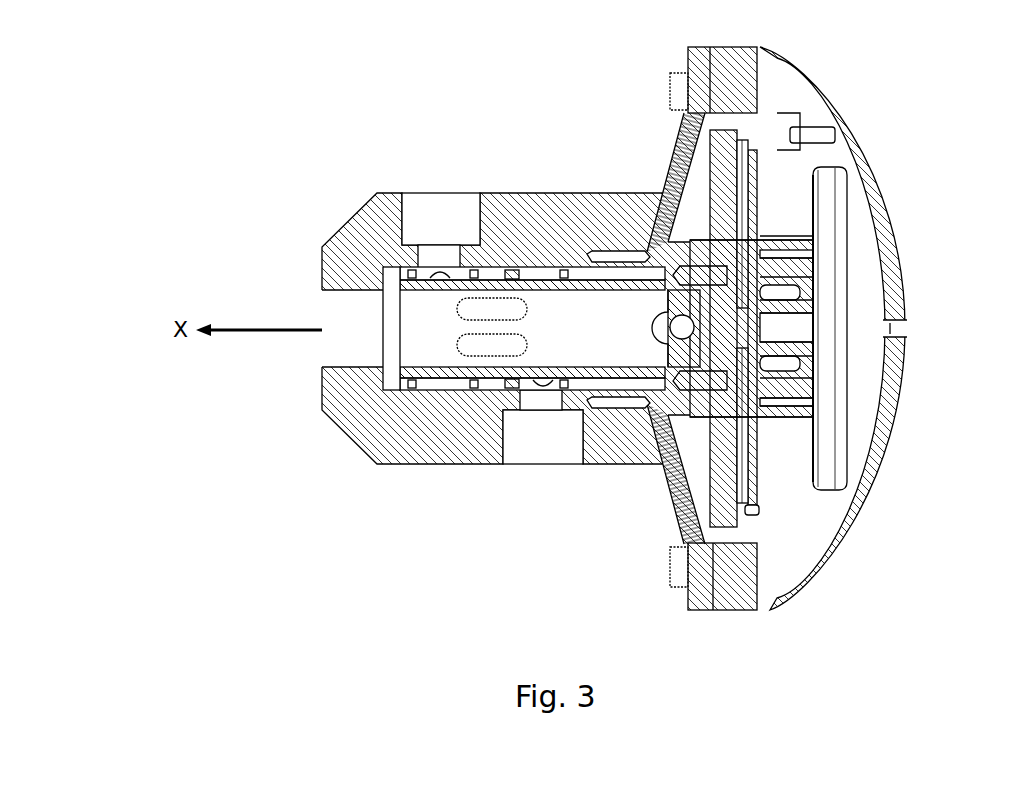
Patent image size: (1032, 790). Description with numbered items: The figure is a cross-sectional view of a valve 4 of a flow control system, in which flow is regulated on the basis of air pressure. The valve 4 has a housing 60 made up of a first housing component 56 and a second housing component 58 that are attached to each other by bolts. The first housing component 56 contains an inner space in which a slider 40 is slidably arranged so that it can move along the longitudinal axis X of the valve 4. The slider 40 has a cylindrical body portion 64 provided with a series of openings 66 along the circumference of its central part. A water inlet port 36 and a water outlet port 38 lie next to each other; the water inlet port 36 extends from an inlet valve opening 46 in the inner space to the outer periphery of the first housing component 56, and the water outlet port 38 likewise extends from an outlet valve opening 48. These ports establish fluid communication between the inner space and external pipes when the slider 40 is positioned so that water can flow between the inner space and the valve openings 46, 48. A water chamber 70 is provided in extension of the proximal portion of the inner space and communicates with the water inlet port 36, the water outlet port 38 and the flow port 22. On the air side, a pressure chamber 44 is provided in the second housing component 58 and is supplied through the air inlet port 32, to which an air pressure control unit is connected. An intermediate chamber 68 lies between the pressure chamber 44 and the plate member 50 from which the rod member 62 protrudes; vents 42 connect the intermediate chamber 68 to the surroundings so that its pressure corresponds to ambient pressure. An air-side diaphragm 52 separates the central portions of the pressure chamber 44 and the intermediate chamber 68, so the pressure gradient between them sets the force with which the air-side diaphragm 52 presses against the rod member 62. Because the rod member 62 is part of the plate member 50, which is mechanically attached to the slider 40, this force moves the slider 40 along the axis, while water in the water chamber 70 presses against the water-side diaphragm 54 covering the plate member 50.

The valve 4 is at (226, 124).
The flow port 22 is at (332, 305).
The air inlet port 32 is at (893, 330).
The water inlet port 36 is at (427, 212).
The water outlet port 38 is at (518, 453).
The slider 40 is at (612, 303).
The vents 42 is at (768, 597).
The pressure chamber 44 is at (830, 400).
The inlet valve opening 46 is at (438, 270).
The outlet valve opening 48 is at (543, 390).
The plate member 50 is at (723, 187).
The air-side diaphragm 52 is at (792, 282).
The water-side diaphragm 54 is at (748, 127).
The first housing component 56 is at (434, 465).
The second housing component 58 is at (731, 597).
The housing 60 is at (610, 532).
The rod member 62 is at (780, 335).
The cylindrical body portion 64 is at (545, 283).
The openings 66 is at (452, 305).
The intermediate chamber 68 is at (738, 485).
The water chamber 70 is at (698, 472).